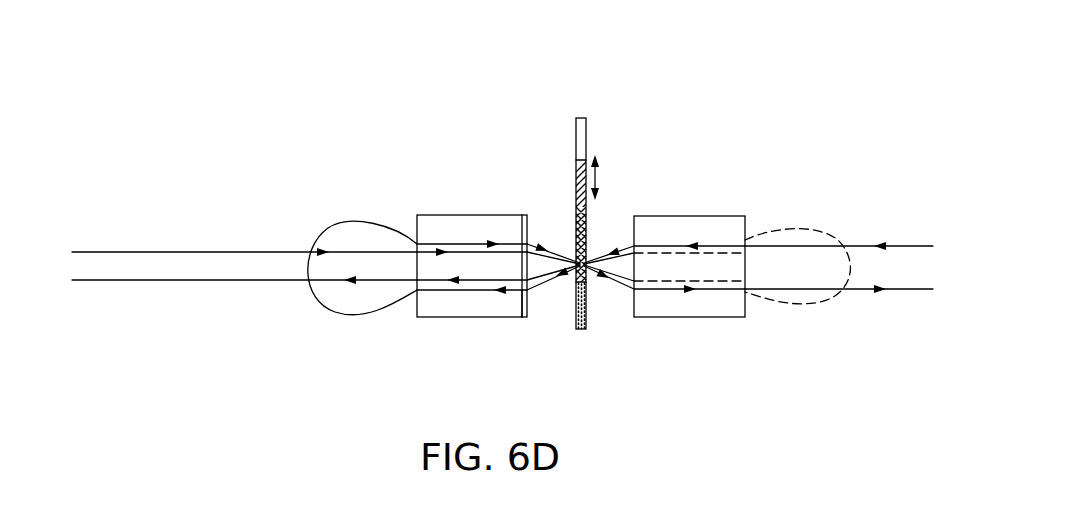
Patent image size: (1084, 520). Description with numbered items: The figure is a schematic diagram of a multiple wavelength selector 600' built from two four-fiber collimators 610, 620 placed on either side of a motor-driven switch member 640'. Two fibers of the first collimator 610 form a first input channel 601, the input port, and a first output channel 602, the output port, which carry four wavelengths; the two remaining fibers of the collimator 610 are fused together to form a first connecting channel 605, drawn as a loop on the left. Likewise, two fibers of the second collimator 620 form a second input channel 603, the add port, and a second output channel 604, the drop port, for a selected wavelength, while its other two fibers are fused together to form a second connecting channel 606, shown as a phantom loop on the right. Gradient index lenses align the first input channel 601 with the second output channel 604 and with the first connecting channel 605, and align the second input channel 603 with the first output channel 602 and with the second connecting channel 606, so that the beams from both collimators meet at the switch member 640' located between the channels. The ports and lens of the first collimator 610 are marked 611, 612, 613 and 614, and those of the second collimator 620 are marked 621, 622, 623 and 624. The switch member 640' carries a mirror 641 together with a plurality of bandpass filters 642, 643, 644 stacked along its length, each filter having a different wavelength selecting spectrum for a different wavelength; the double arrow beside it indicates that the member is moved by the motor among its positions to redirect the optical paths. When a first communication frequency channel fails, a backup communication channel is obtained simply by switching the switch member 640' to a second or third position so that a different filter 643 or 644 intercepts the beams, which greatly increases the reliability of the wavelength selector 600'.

The wavelength selector 600' is at (501, 207).
The first input channel 601 is at (88, 251).
The first output channel 602 is at (88, 281).
The second input channel 603 is at (914, 246).
The second output channel 604 is at (914, 290).
The first connecting channel 605 is at (362, 222).
The second connecting channel 606 is at (810, 230).
The four-fiber collimator 610 is at (433, 213).
The first port of first collimator 611 is at (468, 244).
The second port of first collimator 612 is at (520, 317).
The third port of first collimator 613 is at (462, 292).
The lens of first collimator 614 is at (519, 244).
The four-fiber collimator 620 is at (641, 214).
The first port of second collimator 621 is at (726, 253).
The second port of second collimator 622 is at (726, 282).
The third port of second collimator 623 is at (672, 246).
The fourth port of second collimator 624 is at (658, 290).
The motor-driven switch member 640' is at (559, 194).
The mirror 641 is at (580, 137).
The bandpass filter 642 is at (577, 175).
The bandpass filter 643 is at (588, 292).
The bandpass filter 644 is at (575, 300).